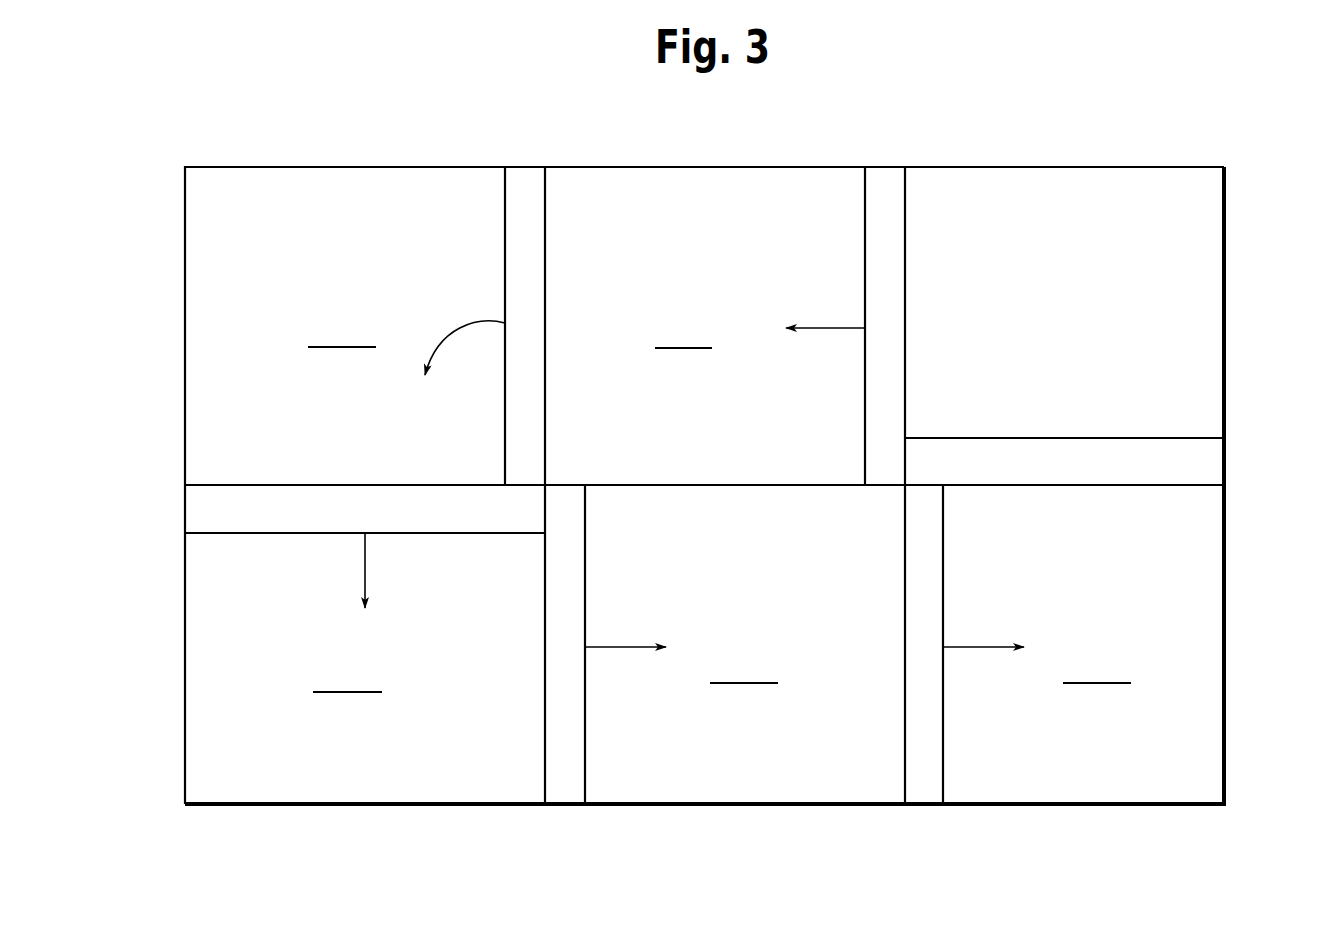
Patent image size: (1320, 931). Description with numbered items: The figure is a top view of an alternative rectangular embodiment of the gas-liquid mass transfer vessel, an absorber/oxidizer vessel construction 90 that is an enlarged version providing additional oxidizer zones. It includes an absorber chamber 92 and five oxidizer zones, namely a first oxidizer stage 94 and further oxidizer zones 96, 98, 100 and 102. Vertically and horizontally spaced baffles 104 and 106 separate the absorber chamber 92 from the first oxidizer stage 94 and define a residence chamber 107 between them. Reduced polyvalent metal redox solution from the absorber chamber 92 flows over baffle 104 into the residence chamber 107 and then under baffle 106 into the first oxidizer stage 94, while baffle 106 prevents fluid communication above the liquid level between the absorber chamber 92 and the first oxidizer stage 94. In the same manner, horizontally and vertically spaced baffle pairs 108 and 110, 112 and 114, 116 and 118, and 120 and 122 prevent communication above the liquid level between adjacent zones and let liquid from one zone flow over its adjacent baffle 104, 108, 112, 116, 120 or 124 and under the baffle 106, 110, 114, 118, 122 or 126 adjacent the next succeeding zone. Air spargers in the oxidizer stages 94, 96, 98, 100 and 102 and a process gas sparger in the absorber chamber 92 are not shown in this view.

The absorber/oxidizer vessel construction 90 is at (1247, 311).
The absorber chamber 92 is at (1079, 185).
The first oxidizer stage 94 is at (679, 185).
The oxidizer zone 96 is at (323, 183).
The oxidizer zone 98 is at (347, 786).
The oxidizer zone 100 is at (765, 786).
The oxidizer zone 102 is at (1112, 786).
The baffle 104 is at (908, 200).
The baffle 106 is at (864, 183).
The residence chamber 107 is at (893, 185).
The baffle 108 is at (548, 188).
The baffle 110 is at (505, 183).
The baffle 112 is at (203, 482).
The baffle 114 is at (207, 536).
The baffle 116 is at (541, 782).
The baffle 118 is at (586, 793).
The baffle 120 is at (903, 783).
The baffle 122 is at (944, 790).
The baffle 124 is at (1197, 487).
The baffle 126 is at (1197, 438).